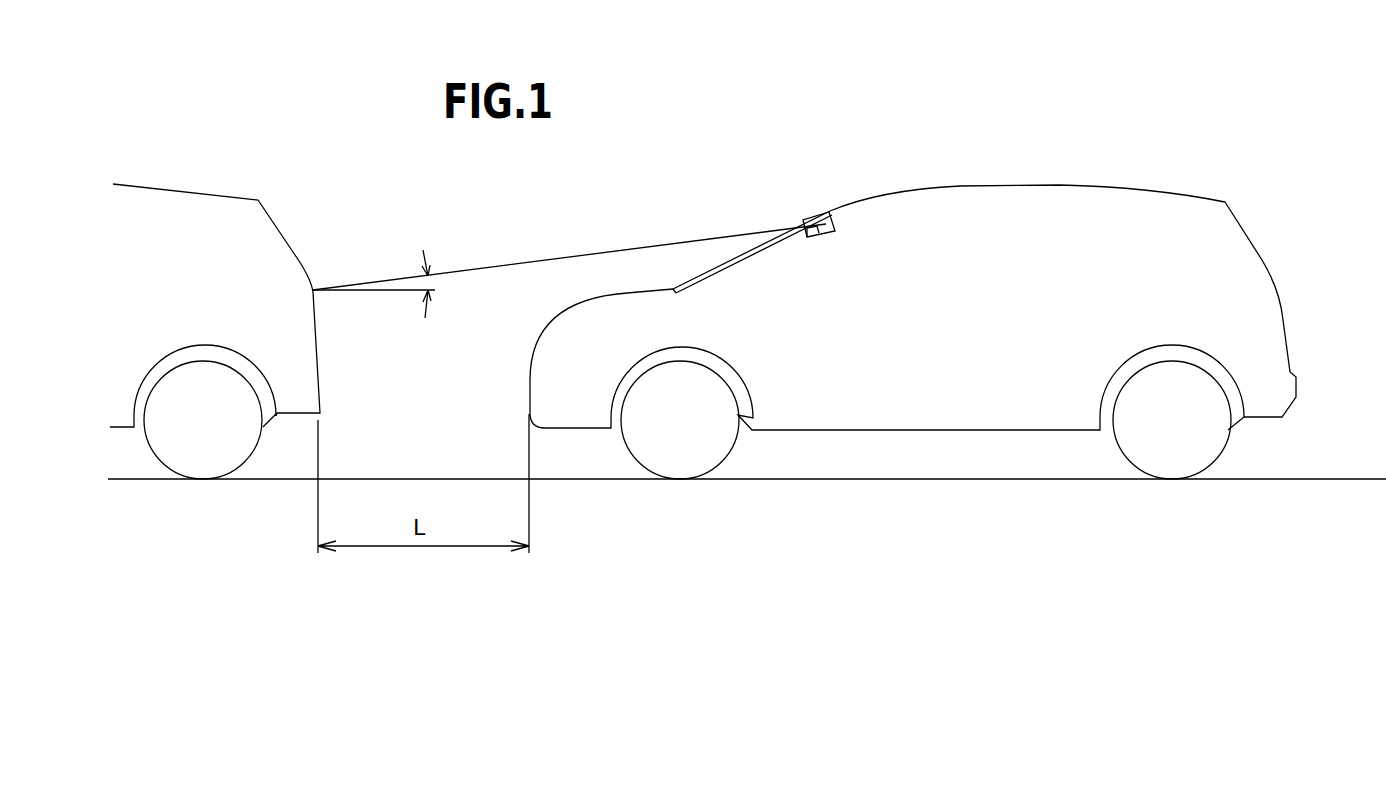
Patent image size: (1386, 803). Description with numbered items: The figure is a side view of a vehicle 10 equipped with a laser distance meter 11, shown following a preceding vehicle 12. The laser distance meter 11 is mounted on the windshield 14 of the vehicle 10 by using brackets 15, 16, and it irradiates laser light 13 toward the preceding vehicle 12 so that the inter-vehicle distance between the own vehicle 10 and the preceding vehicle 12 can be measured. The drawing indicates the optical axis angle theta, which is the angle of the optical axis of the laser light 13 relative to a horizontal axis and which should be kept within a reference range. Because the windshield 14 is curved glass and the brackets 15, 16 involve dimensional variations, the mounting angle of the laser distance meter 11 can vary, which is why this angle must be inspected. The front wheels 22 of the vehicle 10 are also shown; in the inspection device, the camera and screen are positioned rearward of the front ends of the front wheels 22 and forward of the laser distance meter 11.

The vehicle 10 is at (1083, 187).
The laser distance meter 11 is at (815, 218).
The preceding vehicle 12 is at (198, 190).
The laser light 13 is at (620, 253).
The windshield 14 is at (735, 252).
The bracket 15 is at (859, 176).
The bracket 16 is at (836, 222).
The front wheel 22 is at (677, 458).